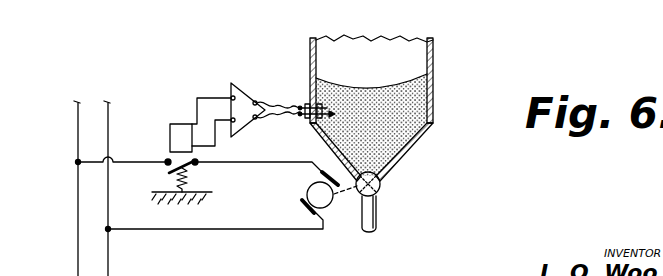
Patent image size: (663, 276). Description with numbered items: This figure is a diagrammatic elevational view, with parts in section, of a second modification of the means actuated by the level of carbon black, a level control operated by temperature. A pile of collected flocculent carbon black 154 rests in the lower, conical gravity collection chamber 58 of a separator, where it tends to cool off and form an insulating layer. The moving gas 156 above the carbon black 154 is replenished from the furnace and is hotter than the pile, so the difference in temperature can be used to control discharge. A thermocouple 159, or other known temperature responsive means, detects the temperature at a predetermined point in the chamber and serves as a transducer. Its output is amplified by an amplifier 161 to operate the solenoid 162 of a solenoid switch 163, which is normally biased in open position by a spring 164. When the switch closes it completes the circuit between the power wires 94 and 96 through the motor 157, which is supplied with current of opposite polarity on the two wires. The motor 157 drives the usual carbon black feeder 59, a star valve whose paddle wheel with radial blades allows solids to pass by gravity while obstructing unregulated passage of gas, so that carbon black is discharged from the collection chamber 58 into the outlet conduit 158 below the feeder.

The gravity collection chamber 58 is at (410, 149).
The carbon black feeder 59 is at (381, 187).
The power wire 94 is at (78, 189).
The power wire 96 is at (110, 257).
The carbon black pile 154 is at (406, 110).
The moving gas 156 is at (384, 73).
The motor 157 is at (307, 193).
The outlet conduit 158 is at (378, 225).
The thermocouple 159 is at (328, 100).
The amplifier 161 is at (232, 84).
The solenoid 162 is at (182, 124).
The solenoid switch 163 is at (170, 176).
The spring 164 is at (195, 180).